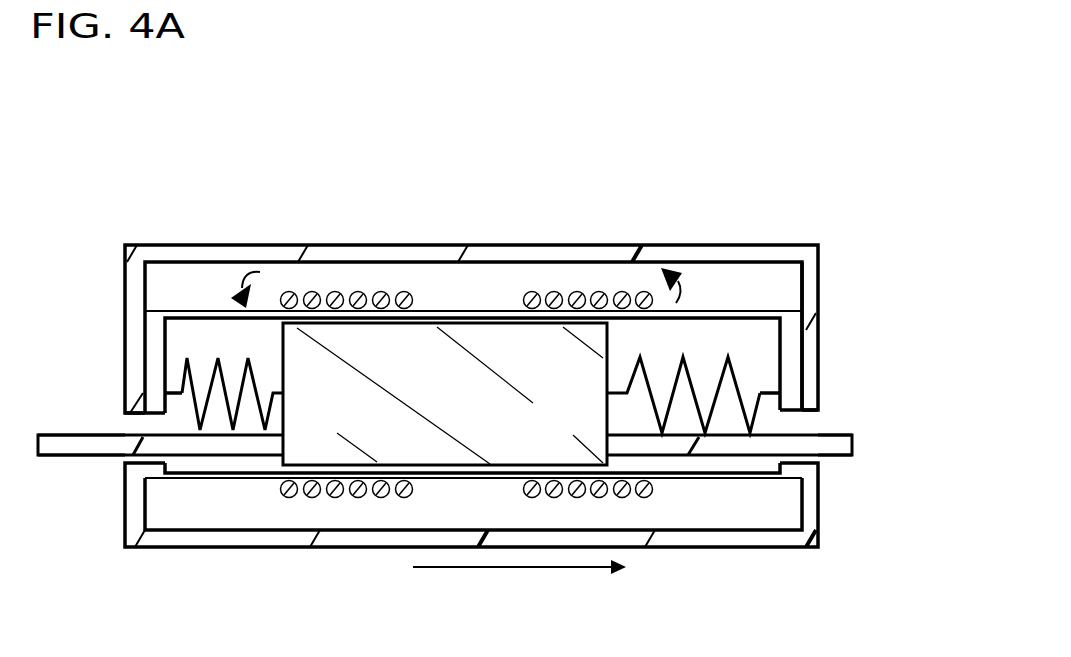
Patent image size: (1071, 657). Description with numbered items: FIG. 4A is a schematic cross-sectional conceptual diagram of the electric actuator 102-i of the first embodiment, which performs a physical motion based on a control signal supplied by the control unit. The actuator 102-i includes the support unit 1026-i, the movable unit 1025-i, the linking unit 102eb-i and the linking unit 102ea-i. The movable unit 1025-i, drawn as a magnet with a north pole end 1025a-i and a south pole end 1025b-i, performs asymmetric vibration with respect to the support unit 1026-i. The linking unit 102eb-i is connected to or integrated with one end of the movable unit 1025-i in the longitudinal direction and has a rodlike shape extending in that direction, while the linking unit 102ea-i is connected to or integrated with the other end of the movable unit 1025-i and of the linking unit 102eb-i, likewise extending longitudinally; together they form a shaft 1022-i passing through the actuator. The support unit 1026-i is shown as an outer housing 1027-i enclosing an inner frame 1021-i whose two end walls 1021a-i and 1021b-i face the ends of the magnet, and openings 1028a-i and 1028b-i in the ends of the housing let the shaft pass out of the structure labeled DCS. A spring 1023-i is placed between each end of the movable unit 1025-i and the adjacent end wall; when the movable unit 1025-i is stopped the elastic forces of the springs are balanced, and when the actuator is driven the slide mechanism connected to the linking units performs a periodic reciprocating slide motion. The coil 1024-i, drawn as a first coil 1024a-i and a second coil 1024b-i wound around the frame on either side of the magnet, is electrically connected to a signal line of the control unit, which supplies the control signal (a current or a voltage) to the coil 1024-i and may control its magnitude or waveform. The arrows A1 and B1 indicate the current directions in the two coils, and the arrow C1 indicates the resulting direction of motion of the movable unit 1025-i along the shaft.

The actuator 102-i is at (823, 122).
The yoke frame 1021-i is at (757, 311).
The first end wall of yoke 1021a-i is at (172, 385).
The second end wall of yoke 1021b-i is at (784, 386).
The spring 1022-i is at (197, 438).
The spring 1023-i is at (752, 396).
The coil 1024-i is at (648, 163).
The first coil 1024a-i is at (313, 292).
The second coil 1024b-i is at (555, 292).
The movable unit 1025-i is at (453, 447).
The north pole of magnet 1025a-i is at (283, 395).
The south pole of magnet 1025b-i is at (608, 394).
The support unit 1026-i is at (827, 190).
The housing cover 1027-i is at (700, 246).
The first opening 1028a-i is at (108, 414).
The second opening 1028b-i is at (842, 414).
The linking unit 102ea-i is at (97, 446).
The linking unit 102eb-i is at (841, 446).
The housing structure DCS is at (826, 298).
The first current direction A1 is at (227, 289).
The second current direction B1 is at (689, 288).
The movement direction C1 is at (519, 586).